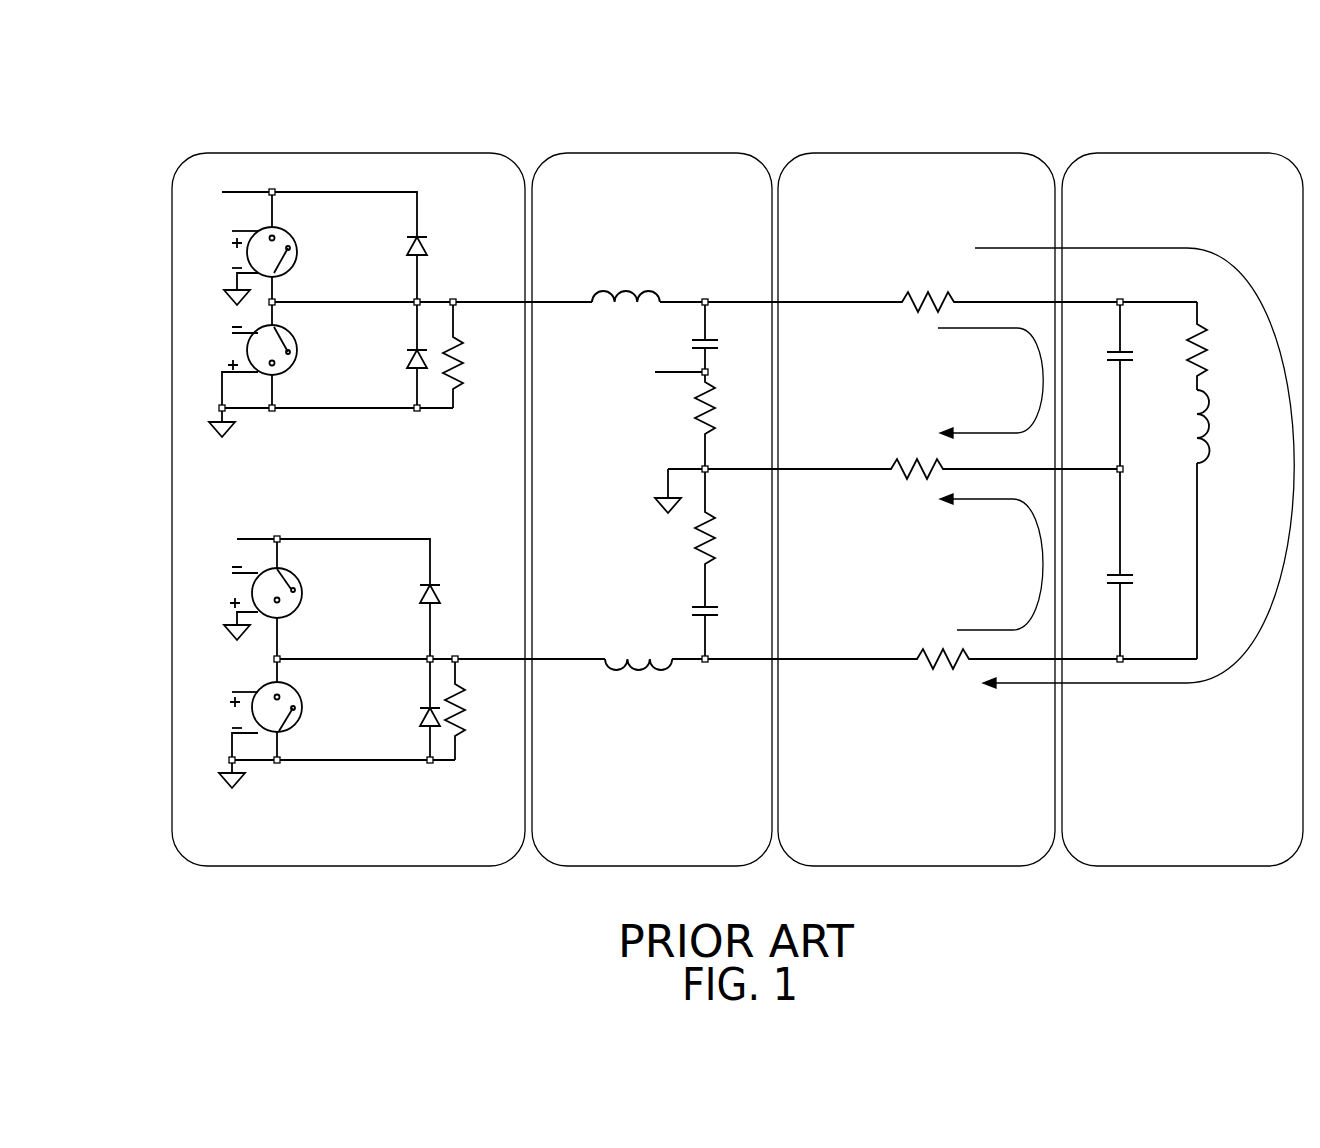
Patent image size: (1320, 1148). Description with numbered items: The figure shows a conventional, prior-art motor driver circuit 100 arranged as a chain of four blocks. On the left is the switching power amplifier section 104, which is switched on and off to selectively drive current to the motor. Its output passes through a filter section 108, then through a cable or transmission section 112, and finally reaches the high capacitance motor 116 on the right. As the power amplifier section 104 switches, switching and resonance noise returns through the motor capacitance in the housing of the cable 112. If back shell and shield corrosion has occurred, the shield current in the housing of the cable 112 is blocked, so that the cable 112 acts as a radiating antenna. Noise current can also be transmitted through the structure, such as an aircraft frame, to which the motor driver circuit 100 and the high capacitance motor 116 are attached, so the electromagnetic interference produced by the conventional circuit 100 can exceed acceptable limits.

The conventional motor driver circuit 100 is at (137, 172).
The switching power amplifier section 104 is at (369, 867).
The filter section 108 is at (660, 867).
The cable or transmission section 112 is at (945, 867).
The high capacitance motor 116 is at (1187, 867).